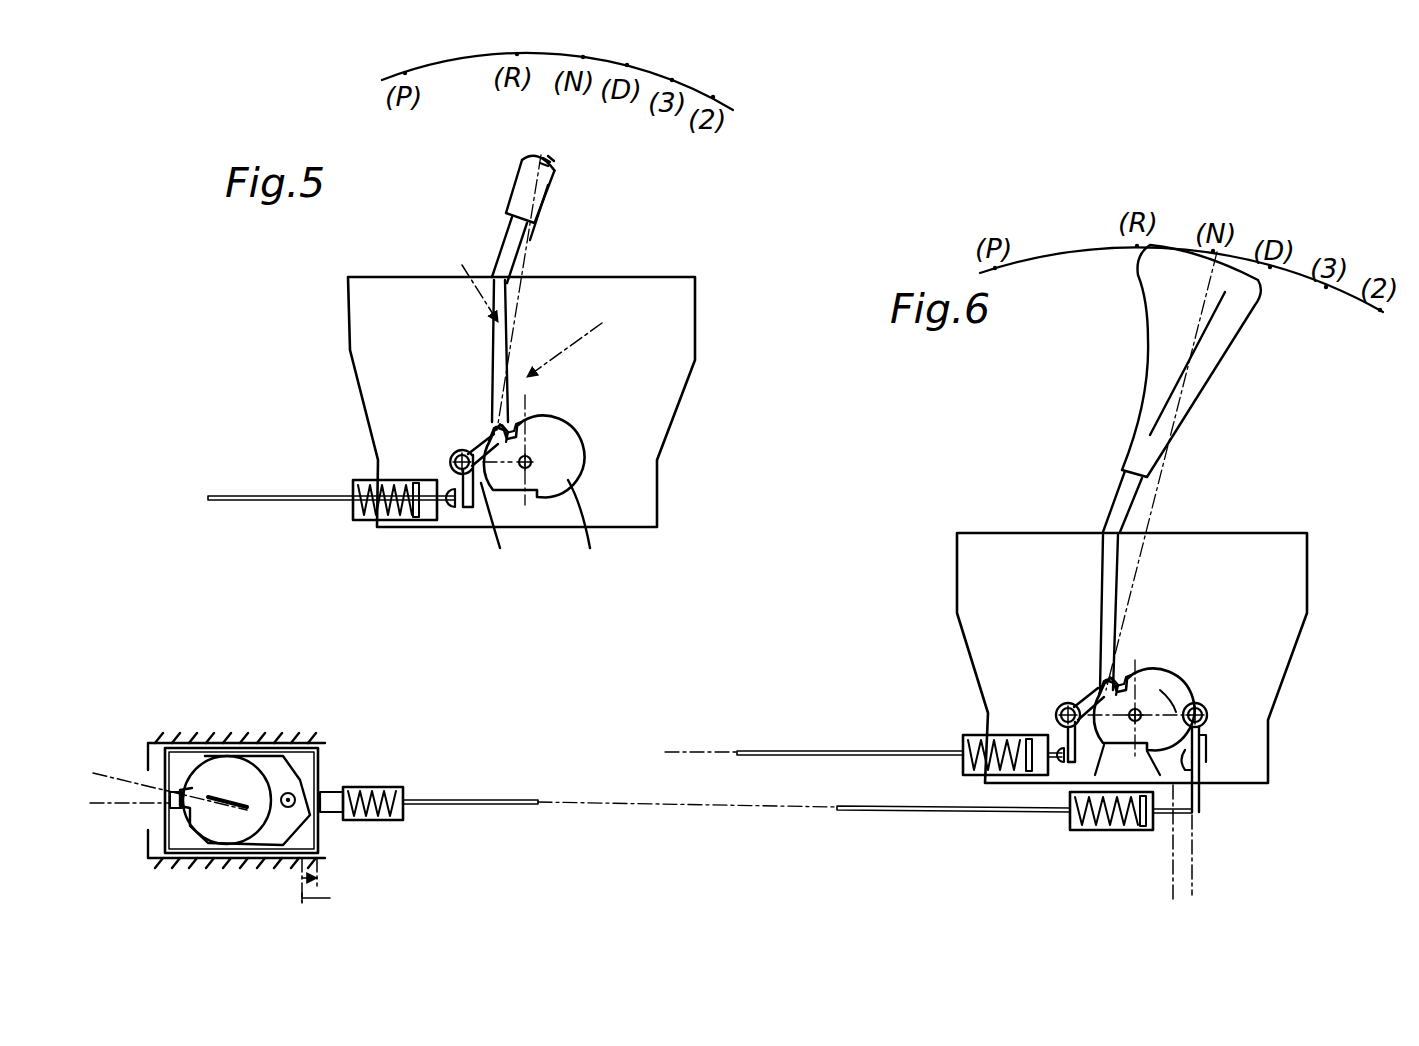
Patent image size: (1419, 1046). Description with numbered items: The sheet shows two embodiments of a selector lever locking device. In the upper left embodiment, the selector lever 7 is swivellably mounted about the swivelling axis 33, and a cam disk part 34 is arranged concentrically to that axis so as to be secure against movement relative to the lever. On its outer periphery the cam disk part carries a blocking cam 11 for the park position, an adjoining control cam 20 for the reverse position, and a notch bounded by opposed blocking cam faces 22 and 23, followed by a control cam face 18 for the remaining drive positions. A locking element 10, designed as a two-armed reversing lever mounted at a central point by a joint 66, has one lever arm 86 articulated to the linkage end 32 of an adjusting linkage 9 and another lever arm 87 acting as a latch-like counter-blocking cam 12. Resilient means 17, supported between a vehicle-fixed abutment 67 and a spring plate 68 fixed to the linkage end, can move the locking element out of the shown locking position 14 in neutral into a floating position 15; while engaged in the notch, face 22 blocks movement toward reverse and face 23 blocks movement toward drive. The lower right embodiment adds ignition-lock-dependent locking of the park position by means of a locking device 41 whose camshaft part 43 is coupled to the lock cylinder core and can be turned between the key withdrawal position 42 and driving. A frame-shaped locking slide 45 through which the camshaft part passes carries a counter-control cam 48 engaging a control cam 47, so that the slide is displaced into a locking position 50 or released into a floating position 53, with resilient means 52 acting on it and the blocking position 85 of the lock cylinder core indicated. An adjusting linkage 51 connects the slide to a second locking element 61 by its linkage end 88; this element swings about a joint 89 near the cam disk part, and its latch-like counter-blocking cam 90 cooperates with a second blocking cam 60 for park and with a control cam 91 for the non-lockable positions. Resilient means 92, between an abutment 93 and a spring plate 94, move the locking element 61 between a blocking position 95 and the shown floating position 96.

In FIG. 5, the selector lever 7 is at (505, 208).
In FIG. 6, the selector lever 7 is at (1098, 450).
In FIG. 5, the adjusting linkage 9 is at (232, 493).
In FIG. 6, the adjusting linkage 9 is at (688, 750).
In FIG. 5, the locking element 10 is at (452, 440).
In FIG. 6, the locking element 10 is at (1058, 695).
In FIG. 5, the blocking cam 11 is at (522, 428).
In FIG. 6, the blocking cam 11 is at (1132, 681).
In FIG. 5, the counter-blocking cam 12 is at (494, 425).
In FIG. 6, the counter-blocking cam 12 is at (1103, 680).
In FIG. 5, the locking position 14 is at (580, 339).
In FIG. 5, the floating position 15 is at (470, 281).
In FIG. 5, the resilient means 17 is at (378, 522).
In FIG. 6, the resilient means 17 is at (962, 740).
In FIG. 5, the control cam face 18 is at (502, 548).
In FIG. 5, the control cam 20 is at (512, 433).
In FIG. 6, the control cam 20 is at (1122, 686).
In FIG. 5, the blocking cam face 22 is at (535, 456).
In FIG. 6, the blocking cam face 22 is at (1120, 728).
In FIG. 5, the blocking cam face 23 is at (512, 425).
In FIG. 6, the blocking cam face 23 is at (1122, 678).
In FIG. 5, the linkage end 32 is at (447, 512).
In FIG. 6, the linkage end 32 is at (1062, 766).
In FIG. 5, the swivelling axis 33 is at (568, 461).
In FIG. 6, the swivelling axis 33 is at (1103, 745).
In FIG. 5, the cam disk part 34 is at (589, 548).
In FIG. 6, the cam disk part 34 is at (1204, 704).
In FIG. 6, the locking device 41 is at (228, 740).
In FIG. 6, the key withdrawal position 42 is at (100, 792).
In FIG. 6, the camshaft part 43 is at (254, 758).
In FIG. 6, the locking slide 45 is at (166, 804).
In FIG. 6, the control cam 47 is at (293, 793).
In FIG. 6, the counter-control cam 48 is at (300, 792).
In FIG. 6, the locking position 50 is at (322, 878).
In FIG. 6, the adjusting linkage 51 is at (597, 800).
In FIG. 6, the resilient means 52 is at (400, 790).
In FIG. 6, the floating position 53 is at (330, 898).
In FIG. 6, the second blocking cam 60 is at (1127, 766).
In FIG. 6, the second locking element 61 is at (1212, 741).
In FIG. 5, the joint 66 is at (446, 452).
In FIG. 6, the joint 66 is at (1050, 708).
In FIG. 5, the abutment 67 is at (358, 522).
In FIG. 5, the spring plate 68 is at (416, 522).
In FIG. 6, the blocking position 85 is at (120, 770).
In FIG. 5, the lever arm 86 is at (448, 484).
In FIG. 5, the lever arm 87 is at (465, 443).
In FIG. 6, the linkage end 88 is at (1200, 800).
In FIG. 6, the joint 89 is at (1212, 705).
In FIG. 6, the counter-blocking cam 90 is at (1200, 788).
In FIG. 6, the control cam 91 is at (1172, 698).
In FIG. 6, the resilient means 92 is at (1097, 832).
In FIG. 6, the abutment 93 is at (1073, 832).
In FIG. 6, the spring plate 94 is at (1142, 832).
In FIG. 6, the blocking position 95 is at (1170, 885).
In FIG. 6, the floating position 96 is at (1196, 885).